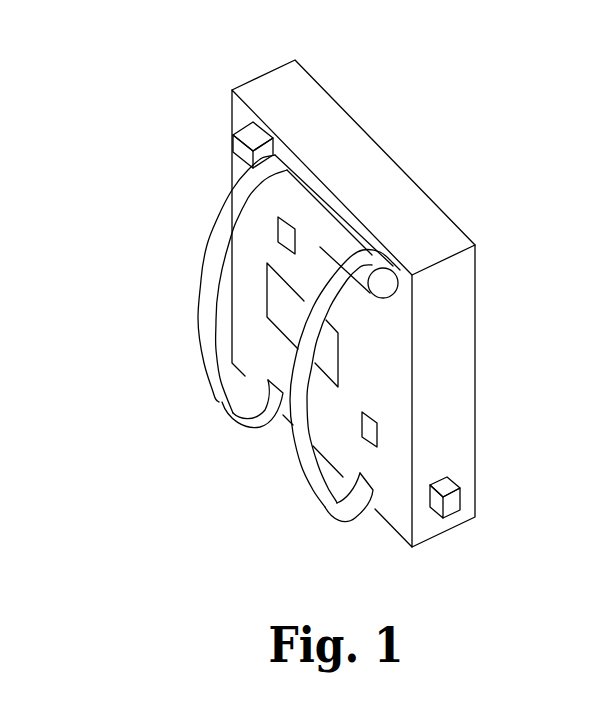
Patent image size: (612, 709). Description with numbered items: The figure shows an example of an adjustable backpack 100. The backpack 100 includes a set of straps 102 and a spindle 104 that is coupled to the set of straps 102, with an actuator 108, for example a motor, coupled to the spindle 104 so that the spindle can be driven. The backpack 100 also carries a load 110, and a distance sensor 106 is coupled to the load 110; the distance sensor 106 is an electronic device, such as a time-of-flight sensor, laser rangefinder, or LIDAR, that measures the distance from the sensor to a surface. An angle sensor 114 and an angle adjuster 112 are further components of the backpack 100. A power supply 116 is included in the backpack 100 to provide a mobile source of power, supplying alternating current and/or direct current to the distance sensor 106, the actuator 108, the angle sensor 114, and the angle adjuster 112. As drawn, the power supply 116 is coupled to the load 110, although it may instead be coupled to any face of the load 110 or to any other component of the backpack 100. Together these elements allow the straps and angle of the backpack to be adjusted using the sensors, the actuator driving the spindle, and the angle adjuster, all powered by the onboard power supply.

The backpack 100 is at (247, 54).
The set of straps 102 is at (219, 402).
The spindle 104 is at (393, 295).
The distance sensor 106 is at (377, 435).
The actuator 108 is at (232, 107).
The load 110 is at (363, 130).
The angle adjuster 112 is at (340, 350).
The angle sensor 114 is at (278, 225).
The power supply 116 is at (453, 518).